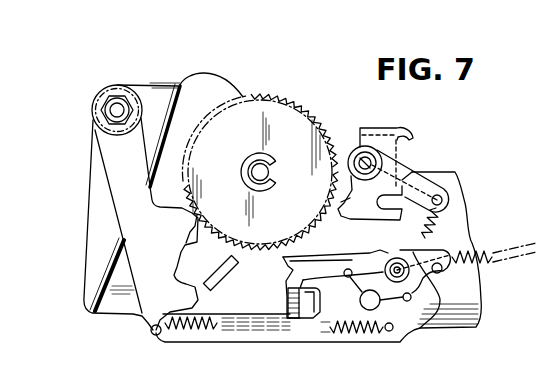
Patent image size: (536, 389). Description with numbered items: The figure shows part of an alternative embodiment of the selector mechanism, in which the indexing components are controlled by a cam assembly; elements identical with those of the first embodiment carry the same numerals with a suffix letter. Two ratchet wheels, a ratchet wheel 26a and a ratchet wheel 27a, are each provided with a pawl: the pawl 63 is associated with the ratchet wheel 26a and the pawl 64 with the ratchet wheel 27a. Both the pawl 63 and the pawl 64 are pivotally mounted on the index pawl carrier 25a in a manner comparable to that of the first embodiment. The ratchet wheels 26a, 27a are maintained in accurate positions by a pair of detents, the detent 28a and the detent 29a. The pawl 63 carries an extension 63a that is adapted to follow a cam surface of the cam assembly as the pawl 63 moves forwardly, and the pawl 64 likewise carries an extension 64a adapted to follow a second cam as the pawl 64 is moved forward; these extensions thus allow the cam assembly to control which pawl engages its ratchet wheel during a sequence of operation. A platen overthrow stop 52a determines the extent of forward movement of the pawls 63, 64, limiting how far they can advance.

The index pawl carrier 25a is at (369, 130).
The ratchet wheel 26a is at (289, 118).
The ratchet wheel 27a is at (256, 95).
The detent 28a is at (116, 186).
The detent 29a is at (156, 97).
The platen overthrow stop 52a is at (229, 274).
The pawl 63 is at (300, 263).
The pawl 64 is at (329, 263).
The extension 63a is at (312, 298).
The extension 64a is at (343, 332).